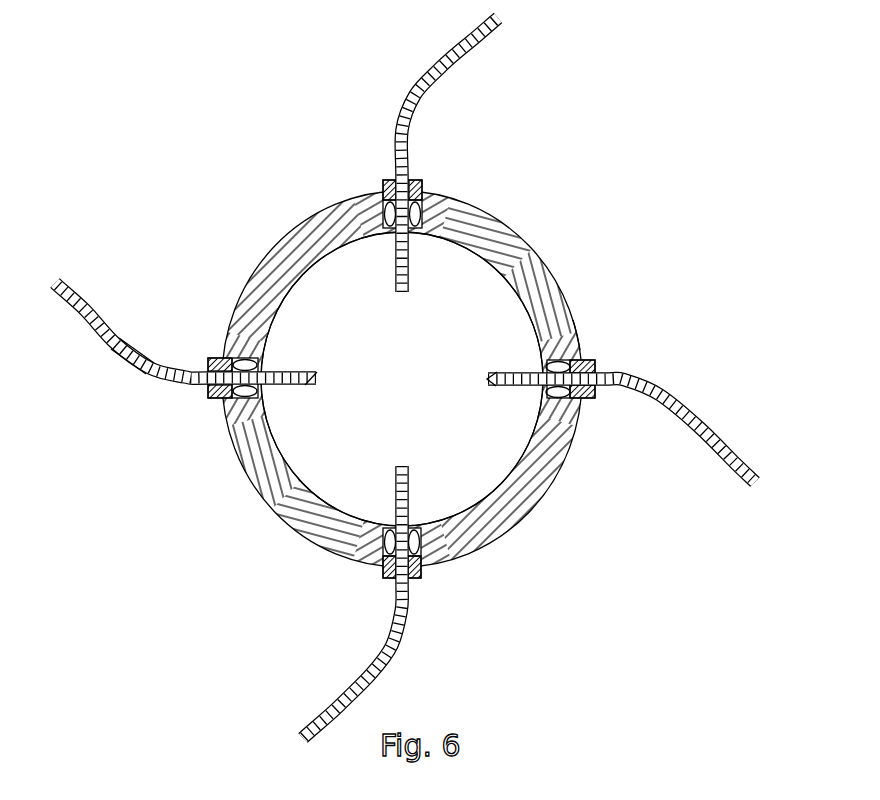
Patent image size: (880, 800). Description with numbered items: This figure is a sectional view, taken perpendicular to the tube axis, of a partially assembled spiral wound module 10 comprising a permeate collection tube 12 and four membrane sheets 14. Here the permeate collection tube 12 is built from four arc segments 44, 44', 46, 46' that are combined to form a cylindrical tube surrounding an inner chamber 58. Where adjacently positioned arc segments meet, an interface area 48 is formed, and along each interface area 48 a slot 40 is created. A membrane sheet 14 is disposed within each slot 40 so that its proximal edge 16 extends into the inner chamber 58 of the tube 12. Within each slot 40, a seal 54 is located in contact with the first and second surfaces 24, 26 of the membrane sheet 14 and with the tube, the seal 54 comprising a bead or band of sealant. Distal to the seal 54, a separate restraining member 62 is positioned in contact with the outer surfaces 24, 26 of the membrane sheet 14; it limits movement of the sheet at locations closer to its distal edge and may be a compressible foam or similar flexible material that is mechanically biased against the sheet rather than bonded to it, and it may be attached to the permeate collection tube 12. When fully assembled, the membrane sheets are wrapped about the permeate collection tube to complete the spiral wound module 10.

The spiral wound module 10 is at (158, 209).
The permeate collection tube 12 is at (421, 394).
The membrane sheet 14 is at (429, 378).
The proximal edge 16 is at (313, 379).
The first surface 24 is at (122, 343).
The second surface 26 is at (121, 357).
The slot 40 is at (416, 240).
The arc segment 44 is at (301, 285).
The arc segment 44' is at (512, 285).
The arc segment 46 is at (310, 473).
The arc segment 46' is at (507, 473).
The interface area 48 is at (433, 368).
The seal 54 is at (578, 336).
The inner chamber 58 is at (360, 472).
The restraining member 62 is at (594, 359).